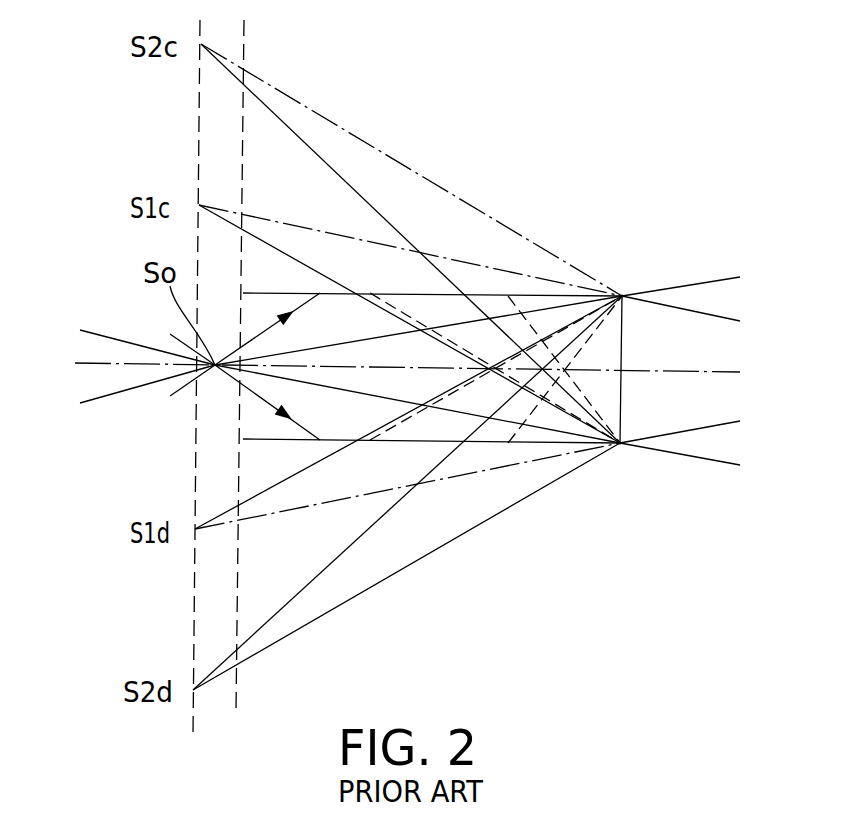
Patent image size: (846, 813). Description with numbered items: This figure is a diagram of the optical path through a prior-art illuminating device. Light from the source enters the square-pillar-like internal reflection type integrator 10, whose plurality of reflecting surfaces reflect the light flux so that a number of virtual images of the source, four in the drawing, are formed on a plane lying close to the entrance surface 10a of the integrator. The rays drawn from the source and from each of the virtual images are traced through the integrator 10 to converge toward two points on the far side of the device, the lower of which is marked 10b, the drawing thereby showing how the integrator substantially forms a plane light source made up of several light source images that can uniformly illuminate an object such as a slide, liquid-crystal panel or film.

The internal reflection type integrator 10 is at (612, 279).
The entrance surface 10a is at (240, 413).
The second surface of plate 10b is at (620, 412).